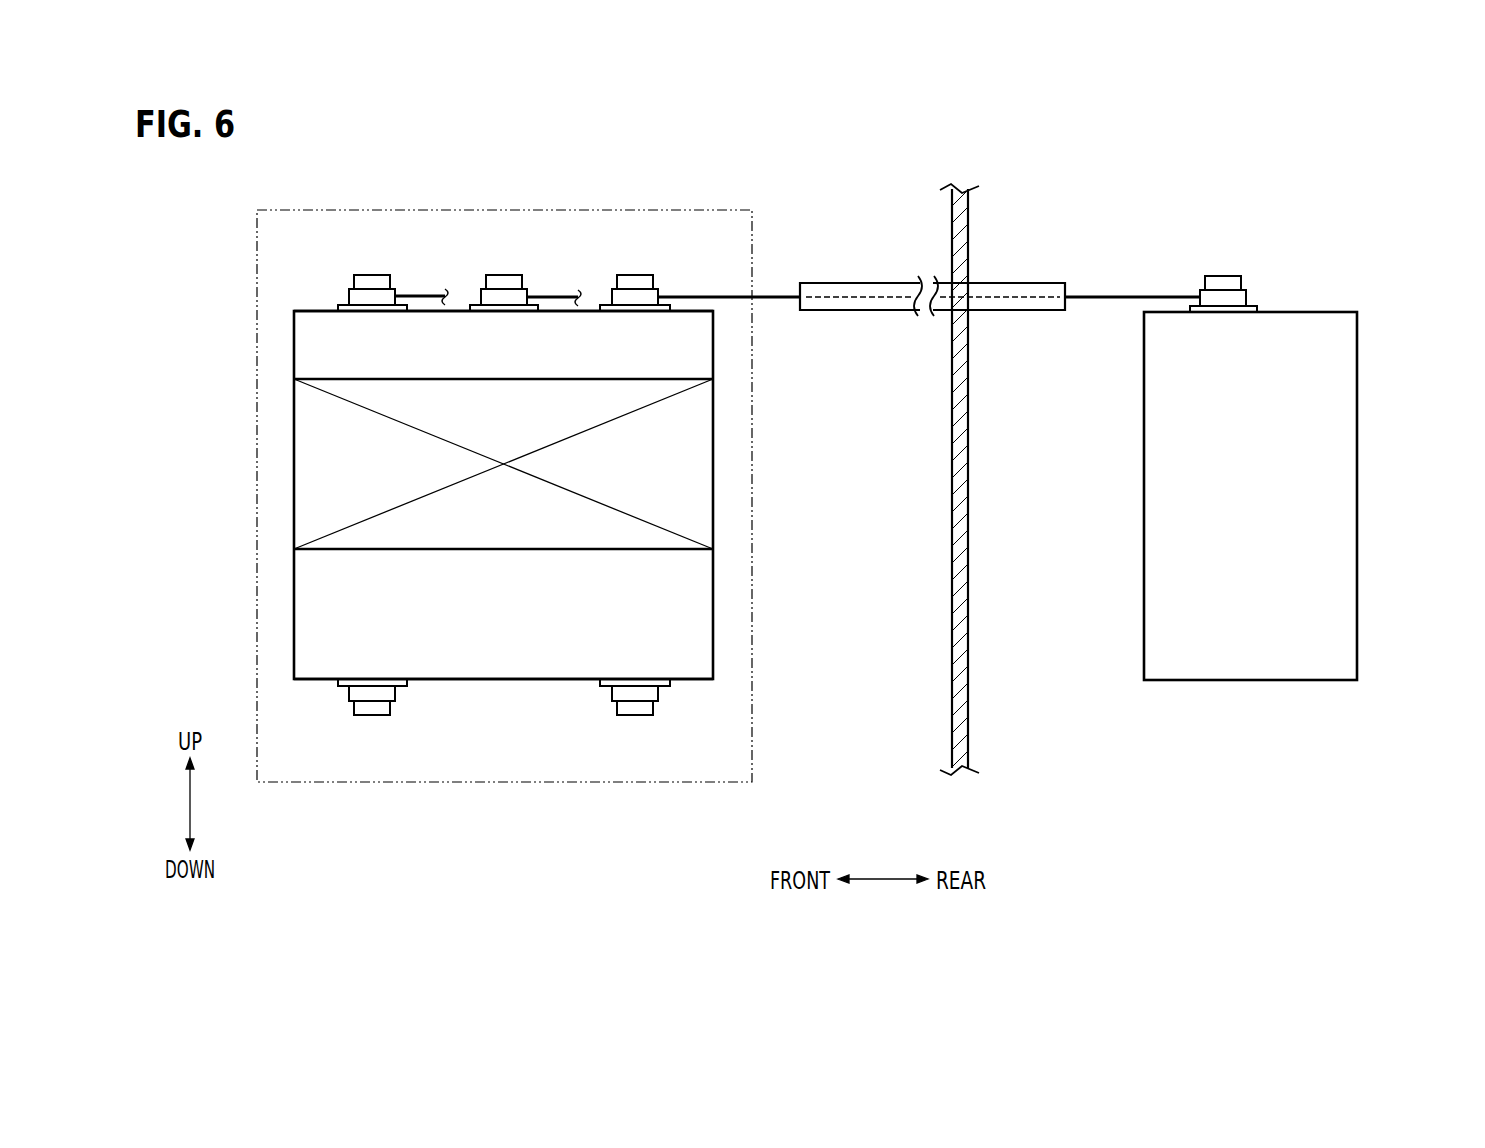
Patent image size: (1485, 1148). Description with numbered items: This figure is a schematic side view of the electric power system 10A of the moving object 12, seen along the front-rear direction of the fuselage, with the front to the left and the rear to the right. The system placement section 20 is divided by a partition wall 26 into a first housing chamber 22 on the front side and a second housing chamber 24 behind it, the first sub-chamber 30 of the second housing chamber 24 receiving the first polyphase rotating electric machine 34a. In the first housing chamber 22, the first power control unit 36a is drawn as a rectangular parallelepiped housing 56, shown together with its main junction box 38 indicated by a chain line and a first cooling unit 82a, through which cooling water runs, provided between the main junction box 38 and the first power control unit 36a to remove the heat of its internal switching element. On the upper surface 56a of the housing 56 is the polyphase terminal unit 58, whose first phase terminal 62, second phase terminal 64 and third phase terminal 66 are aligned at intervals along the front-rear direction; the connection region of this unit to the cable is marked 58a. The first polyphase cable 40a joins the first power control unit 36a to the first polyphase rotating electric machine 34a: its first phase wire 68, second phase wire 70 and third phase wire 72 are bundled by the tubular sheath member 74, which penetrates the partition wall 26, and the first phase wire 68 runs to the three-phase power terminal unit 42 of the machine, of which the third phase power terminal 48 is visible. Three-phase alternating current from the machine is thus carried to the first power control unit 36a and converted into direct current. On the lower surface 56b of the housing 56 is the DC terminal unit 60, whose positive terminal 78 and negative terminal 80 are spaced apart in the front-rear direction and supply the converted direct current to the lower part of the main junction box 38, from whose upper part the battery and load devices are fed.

The electric power system 10A is at (325, 184).
The moving object 12 is at (533, 495).
The system placement section 20 is at (918, 195).
The first housing chamber 22 is at (876, 733).
The second housing chamber 24 is at (1044, 733).
The partition wall 26 is at (963, 620).
The first sub-chamber 30 is at (1058, 774).
The first polyphase rotating electric machine 34a is at (1344, 392).
The first power control unit 36a is at (716, 355).
The main junction box 38 is at (752, 681).
The first polyphase cable 40a is at (836, 283).
The power terminal unit 42 is at (1248, 241).
The third phase power terminal 48 is at (1260, 262).
The housing 56 is at (551, 501).
The upper surface 56a is at (318, 306).
The lower surface 56b is at (318, 685).
The polyphase terminal unit 58 is at (700, 239).
The bus bar connection 58a is at (700, 239).
The DC terminal unit 60 is at (368, 757).
The first phase terminal 62 is at (636, 275).
The second phase terminal 64 is at (505, 275).
The third phase terminal 66 is at (374, 275).
The first phase wire 68 is at (681, 296).
The second phase wire 70 is at (551, 293).
The third phase wire 72 is at (420, 293).
The sheath member 74 is at (1005, 283).
The positive terminal 78 is at (374, 717).
The negative terminal 80 is at (636, 717).
The first cooling unit 82a is at (692, 458).